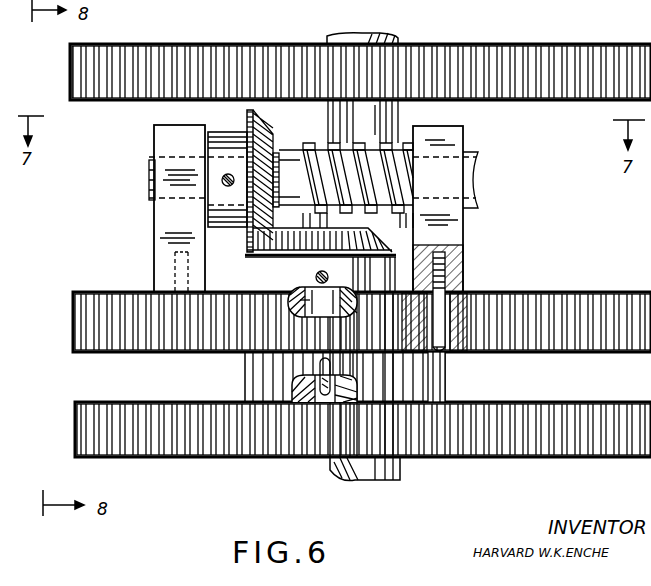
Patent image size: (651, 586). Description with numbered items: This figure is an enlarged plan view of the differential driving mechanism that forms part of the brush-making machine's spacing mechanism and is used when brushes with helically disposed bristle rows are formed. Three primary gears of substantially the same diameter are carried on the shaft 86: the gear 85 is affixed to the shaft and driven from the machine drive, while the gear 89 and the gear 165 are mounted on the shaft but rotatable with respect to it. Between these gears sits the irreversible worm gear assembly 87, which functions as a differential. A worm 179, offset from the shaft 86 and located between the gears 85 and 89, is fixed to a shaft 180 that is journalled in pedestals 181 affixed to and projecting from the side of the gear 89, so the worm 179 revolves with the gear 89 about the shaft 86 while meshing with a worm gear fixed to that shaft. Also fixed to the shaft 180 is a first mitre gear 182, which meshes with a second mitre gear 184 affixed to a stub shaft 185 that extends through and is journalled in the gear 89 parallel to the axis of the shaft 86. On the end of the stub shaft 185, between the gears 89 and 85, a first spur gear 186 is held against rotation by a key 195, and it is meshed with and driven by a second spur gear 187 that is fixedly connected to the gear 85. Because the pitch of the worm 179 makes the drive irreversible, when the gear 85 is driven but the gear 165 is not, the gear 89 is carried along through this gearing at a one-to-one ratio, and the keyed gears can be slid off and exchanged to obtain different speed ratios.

The gear 85 is at (600, 58).
The shaft 86 is at (345, 34).
The irreversible worm gear assembly 87 is at (488, 152).
The gear 89 is at (592, 292).
The gear 165 is at (163, 448).
The worm 179 is at (308, 142).
The shaft 180 is at (150, 175).
The pedestals 181 is at (156, 226).
The first mitre gear 182 is at (247, 130).
The second mitre gear 184 is at (268, 255).
The stub shaft 185 is at (298, 303).
The first spur gear 186 is at (247, 384).
The second spur gear 187 is at (446, 380).
The key 195 is at (318, 395).